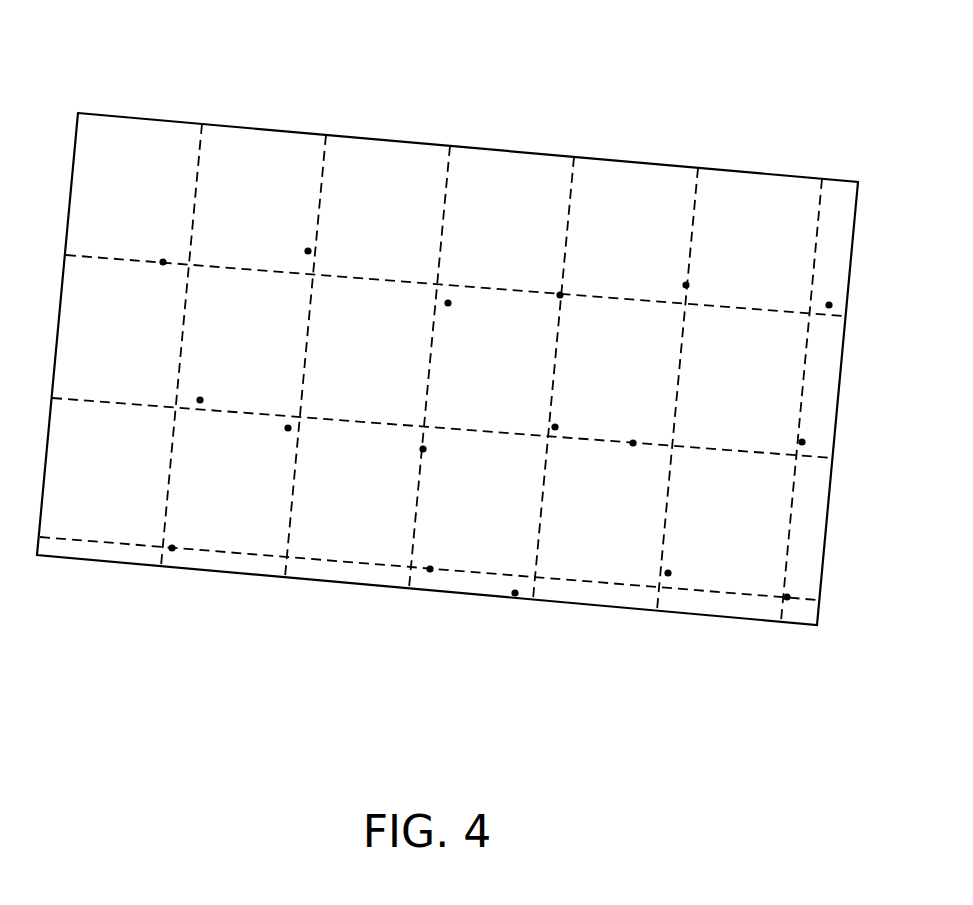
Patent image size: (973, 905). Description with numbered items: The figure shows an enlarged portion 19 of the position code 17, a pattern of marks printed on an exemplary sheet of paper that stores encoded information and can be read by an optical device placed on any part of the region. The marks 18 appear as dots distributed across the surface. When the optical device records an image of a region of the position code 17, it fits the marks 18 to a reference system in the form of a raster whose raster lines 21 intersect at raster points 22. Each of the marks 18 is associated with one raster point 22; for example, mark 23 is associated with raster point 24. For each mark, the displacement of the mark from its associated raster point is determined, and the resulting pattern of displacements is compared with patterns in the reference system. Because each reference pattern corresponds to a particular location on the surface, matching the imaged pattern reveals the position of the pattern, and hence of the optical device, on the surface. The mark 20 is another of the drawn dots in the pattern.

The position code 17 is at (518, 237).
The marks 18 is at (174, 550).
The enlarged portion 19 is at (770, 122).
The attachment point 20 is at (290, 430).
The raster lines 21 is at (160, 263).
The raster points 22 is at (807, 455).
The mark 23 is at (303, 250).
The raster point 24 is at (313, 275).